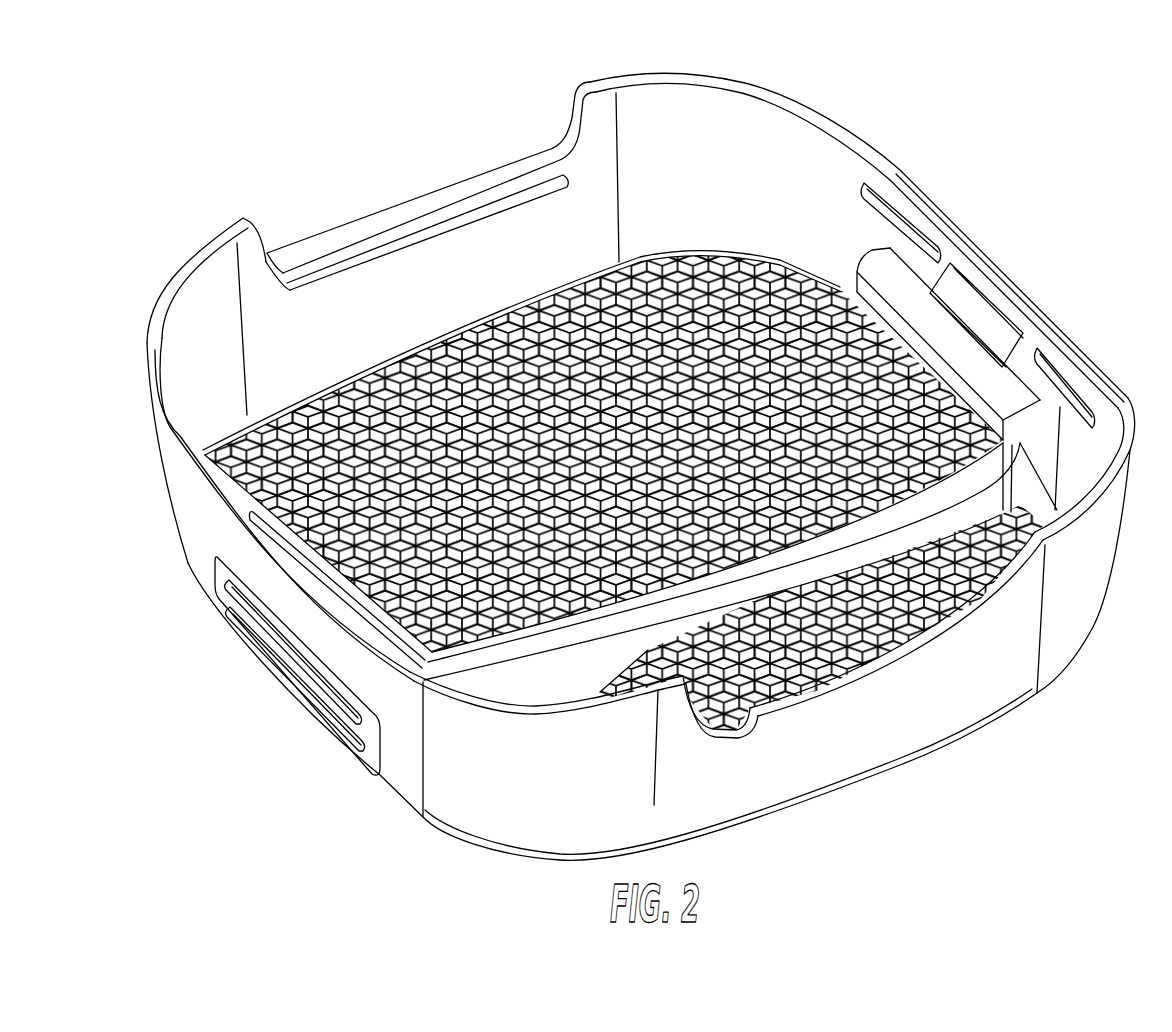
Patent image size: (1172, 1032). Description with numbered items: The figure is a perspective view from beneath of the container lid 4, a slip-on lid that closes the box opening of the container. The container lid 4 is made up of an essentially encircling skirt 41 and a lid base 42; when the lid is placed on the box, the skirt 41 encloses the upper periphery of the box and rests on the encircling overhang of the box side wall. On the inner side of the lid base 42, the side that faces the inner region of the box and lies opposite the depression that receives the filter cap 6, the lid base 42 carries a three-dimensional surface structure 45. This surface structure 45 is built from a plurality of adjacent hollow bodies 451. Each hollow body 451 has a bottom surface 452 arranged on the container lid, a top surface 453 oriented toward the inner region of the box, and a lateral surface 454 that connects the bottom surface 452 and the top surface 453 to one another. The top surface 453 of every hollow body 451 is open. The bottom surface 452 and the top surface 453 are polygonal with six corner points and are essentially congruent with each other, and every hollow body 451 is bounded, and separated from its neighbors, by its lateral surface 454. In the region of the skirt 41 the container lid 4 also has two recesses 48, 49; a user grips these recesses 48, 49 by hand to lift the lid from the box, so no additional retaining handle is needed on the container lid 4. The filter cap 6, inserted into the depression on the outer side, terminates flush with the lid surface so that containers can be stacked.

The container lid 4 is at (236, 100).
The filter cap 6 is at (262, 665).
The skirt 41 is at (1073, 578).
The lid base 42 is at (800, 805).
The three-dimensional surface structure 45 is at (905, 492).
The recess 48 is at (855, 655).
The recess 49 is at (415, 200).
The hollow body 451 is at (527, 613).
The bottom surface 452 is at (483, 635).
The top surface 453 is at (292, 427).
The lateral surface 454 is at (883, 478).